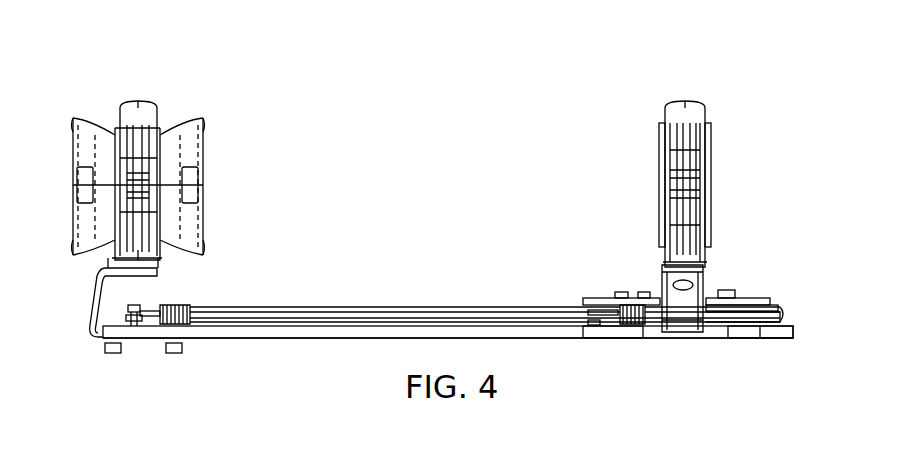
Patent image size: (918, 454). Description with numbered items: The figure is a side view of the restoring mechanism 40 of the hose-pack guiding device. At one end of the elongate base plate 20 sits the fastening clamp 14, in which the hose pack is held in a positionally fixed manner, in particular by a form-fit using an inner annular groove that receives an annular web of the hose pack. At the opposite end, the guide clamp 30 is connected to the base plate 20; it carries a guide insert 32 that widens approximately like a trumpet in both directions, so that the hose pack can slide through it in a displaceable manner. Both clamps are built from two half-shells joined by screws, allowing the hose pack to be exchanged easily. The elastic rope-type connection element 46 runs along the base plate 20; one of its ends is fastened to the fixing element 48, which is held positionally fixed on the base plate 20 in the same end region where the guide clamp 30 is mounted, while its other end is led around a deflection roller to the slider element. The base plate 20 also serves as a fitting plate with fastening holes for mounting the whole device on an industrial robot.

The fastening clamp 14 is at (690, 105).
The base plate 20 is at (245, 332).
The guide clamp 30 is at (152, 105).
The guide insert 32 is at (84, 130).
The restoring mechanism 40 is at (528, 106).
The connection element 46 is at (348, 318).
The fixing element 48 is at (146, 332).